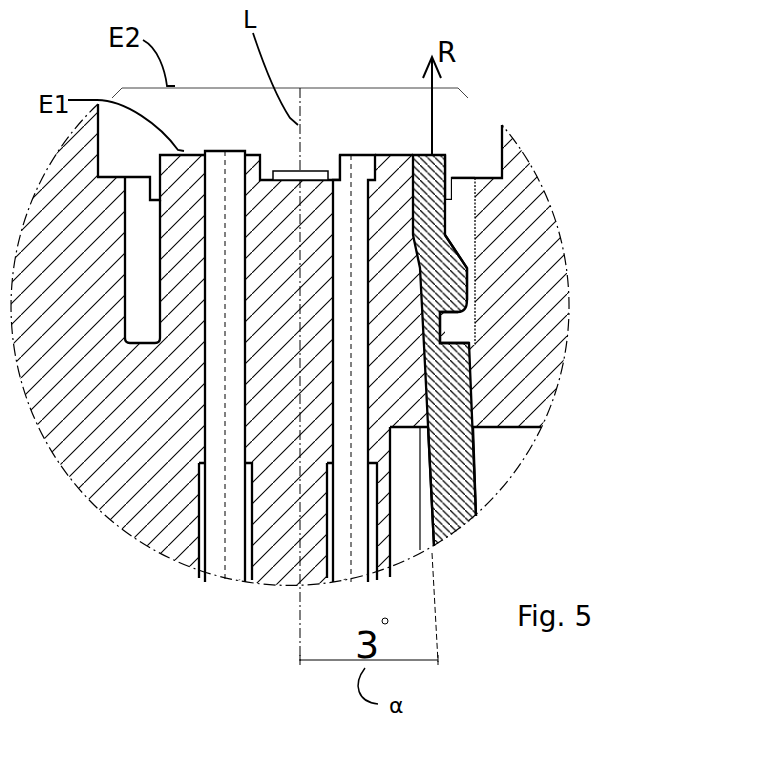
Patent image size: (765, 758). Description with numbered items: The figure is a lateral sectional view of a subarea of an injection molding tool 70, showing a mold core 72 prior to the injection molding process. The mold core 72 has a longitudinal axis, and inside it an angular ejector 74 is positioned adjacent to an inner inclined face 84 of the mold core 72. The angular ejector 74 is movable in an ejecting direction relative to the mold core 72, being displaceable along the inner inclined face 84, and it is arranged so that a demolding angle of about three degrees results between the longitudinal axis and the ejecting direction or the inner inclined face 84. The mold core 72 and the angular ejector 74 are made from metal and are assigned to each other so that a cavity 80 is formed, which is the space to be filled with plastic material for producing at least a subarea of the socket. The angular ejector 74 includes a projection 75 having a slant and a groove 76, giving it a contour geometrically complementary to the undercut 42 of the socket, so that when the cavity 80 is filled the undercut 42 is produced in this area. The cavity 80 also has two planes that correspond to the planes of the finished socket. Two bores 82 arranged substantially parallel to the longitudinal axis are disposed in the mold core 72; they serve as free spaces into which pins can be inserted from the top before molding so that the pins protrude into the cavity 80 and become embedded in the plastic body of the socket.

The injection molding tool 70 is at (620, 176).
The mold core 72 is at (543, 350).
The angular ejector 74 is at (460, 518).
The projection 75 is at (468, 297).
The groove 76 is at (452, 330).
The cavity 80 is at (463, 197).
The bores 82 is at (343, 577).
The inner inclined face 84 is at (403, 183).
The undercut 42 is at (473, 257).